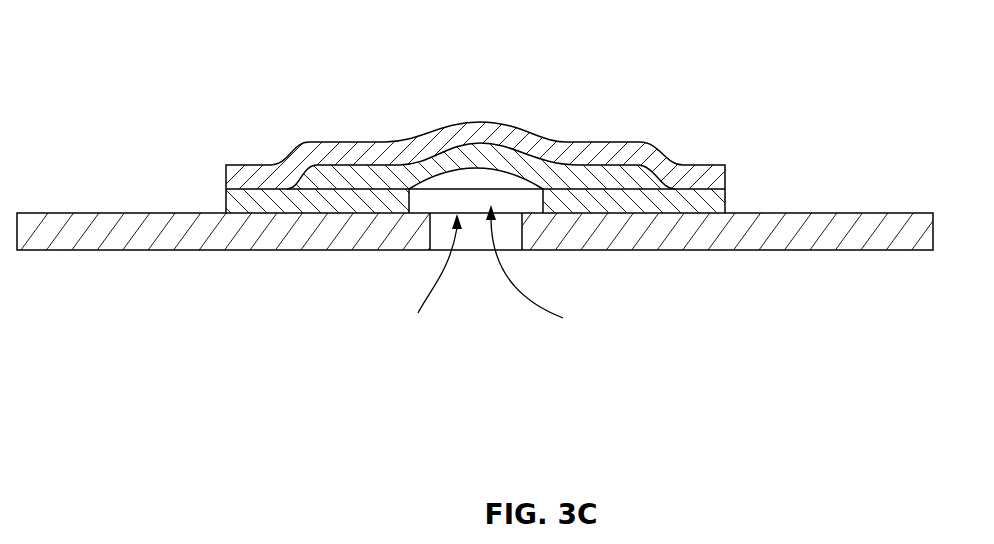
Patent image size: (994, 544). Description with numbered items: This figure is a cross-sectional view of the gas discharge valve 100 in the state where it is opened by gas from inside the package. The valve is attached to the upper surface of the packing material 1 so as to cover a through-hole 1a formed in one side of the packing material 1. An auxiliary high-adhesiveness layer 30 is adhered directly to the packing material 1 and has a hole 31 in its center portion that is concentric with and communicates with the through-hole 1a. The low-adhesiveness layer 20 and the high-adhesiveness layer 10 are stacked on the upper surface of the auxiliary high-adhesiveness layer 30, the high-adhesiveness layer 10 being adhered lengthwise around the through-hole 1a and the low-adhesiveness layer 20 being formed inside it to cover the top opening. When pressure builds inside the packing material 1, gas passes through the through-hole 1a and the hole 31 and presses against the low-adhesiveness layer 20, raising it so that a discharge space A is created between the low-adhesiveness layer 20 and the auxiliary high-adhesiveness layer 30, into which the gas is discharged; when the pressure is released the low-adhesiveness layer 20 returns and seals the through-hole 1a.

The packing material 1 is at (878, 242).
The through-hole 1a is at (477, 232).
The high-adhesiveness layer 10 is at (247, 178).
The low-adhesiveness layer 20 is at (327, 178).
The auxiliary high-adhesiveness layer 30 is at (683, 205).
The hole 31 is at (510, 203).
The gas discharge valve 100 is at (700, 137).
The discharge space A is at (472, 178).